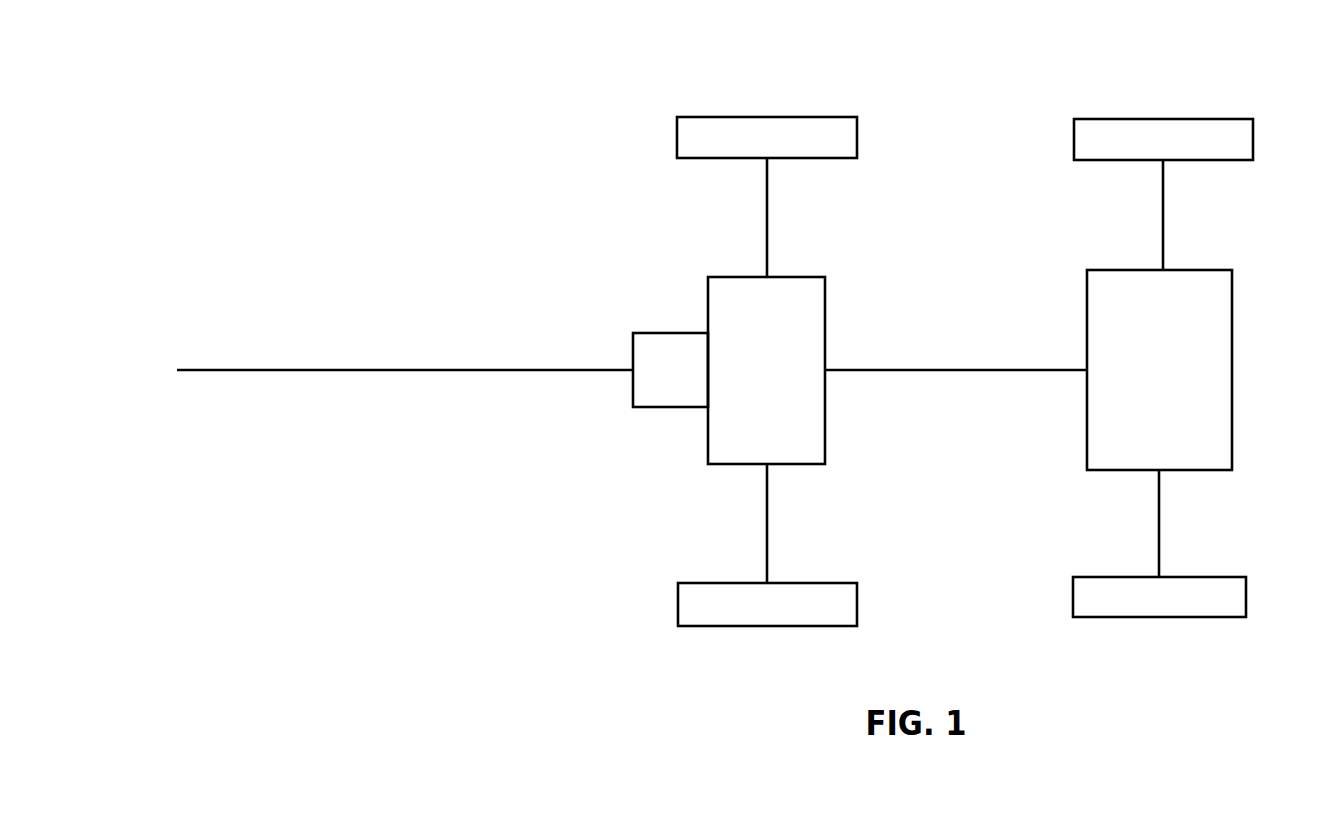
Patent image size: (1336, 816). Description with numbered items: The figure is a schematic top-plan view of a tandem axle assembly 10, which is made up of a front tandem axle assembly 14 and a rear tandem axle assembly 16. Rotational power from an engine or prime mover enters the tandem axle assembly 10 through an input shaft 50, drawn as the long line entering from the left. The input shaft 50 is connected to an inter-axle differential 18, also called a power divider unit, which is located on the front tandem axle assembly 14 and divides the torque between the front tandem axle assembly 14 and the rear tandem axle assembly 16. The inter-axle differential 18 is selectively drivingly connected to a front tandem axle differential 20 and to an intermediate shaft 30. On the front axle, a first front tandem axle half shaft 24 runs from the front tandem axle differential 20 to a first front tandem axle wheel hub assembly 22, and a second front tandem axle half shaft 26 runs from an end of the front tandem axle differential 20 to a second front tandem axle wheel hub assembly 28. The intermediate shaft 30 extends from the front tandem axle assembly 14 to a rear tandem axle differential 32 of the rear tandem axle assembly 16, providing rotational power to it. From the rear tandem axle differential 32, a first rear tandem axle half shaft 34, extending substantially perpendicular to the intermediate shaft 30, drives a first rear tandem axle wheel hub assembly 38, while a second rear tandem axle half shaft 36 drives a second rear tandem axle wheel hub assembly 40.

The tandem axle assembly 10 is at (379, 156).
The front tandem axle assembly 14 is at (642, 238).
The rear tandem axle assembly 16 is at (1031, 239).
The inter-axle differential 18 is at (652, 408).
The front tandem axle differential 20 is at (825, 427).
The first front tandem axle wheel hub assembly 22 is at (768, 626).
The first front tandem axle half shaft 24 is at (768, 540).
The second front tandem axle half shaft 26 is at (767, 218).
The second front tandem axle wheel hub assembly 28 is at (766, 116).
The intermediate shaft 30 is at (923, 370).
The rear tandem axle differential 32 is at (1232, 377).
The first rear tandem axle half shaft 34 is at (1159, 542).
The second rear tandem axle half shaft 36 is at (1163, 224).
The first rear tandem axle wheel hub assembly 38 is at (1167, 618).
The second rear tandem axle wheel hub assembly 40 is at (1160, 119).
The input shaft 50 is at (390, 378).